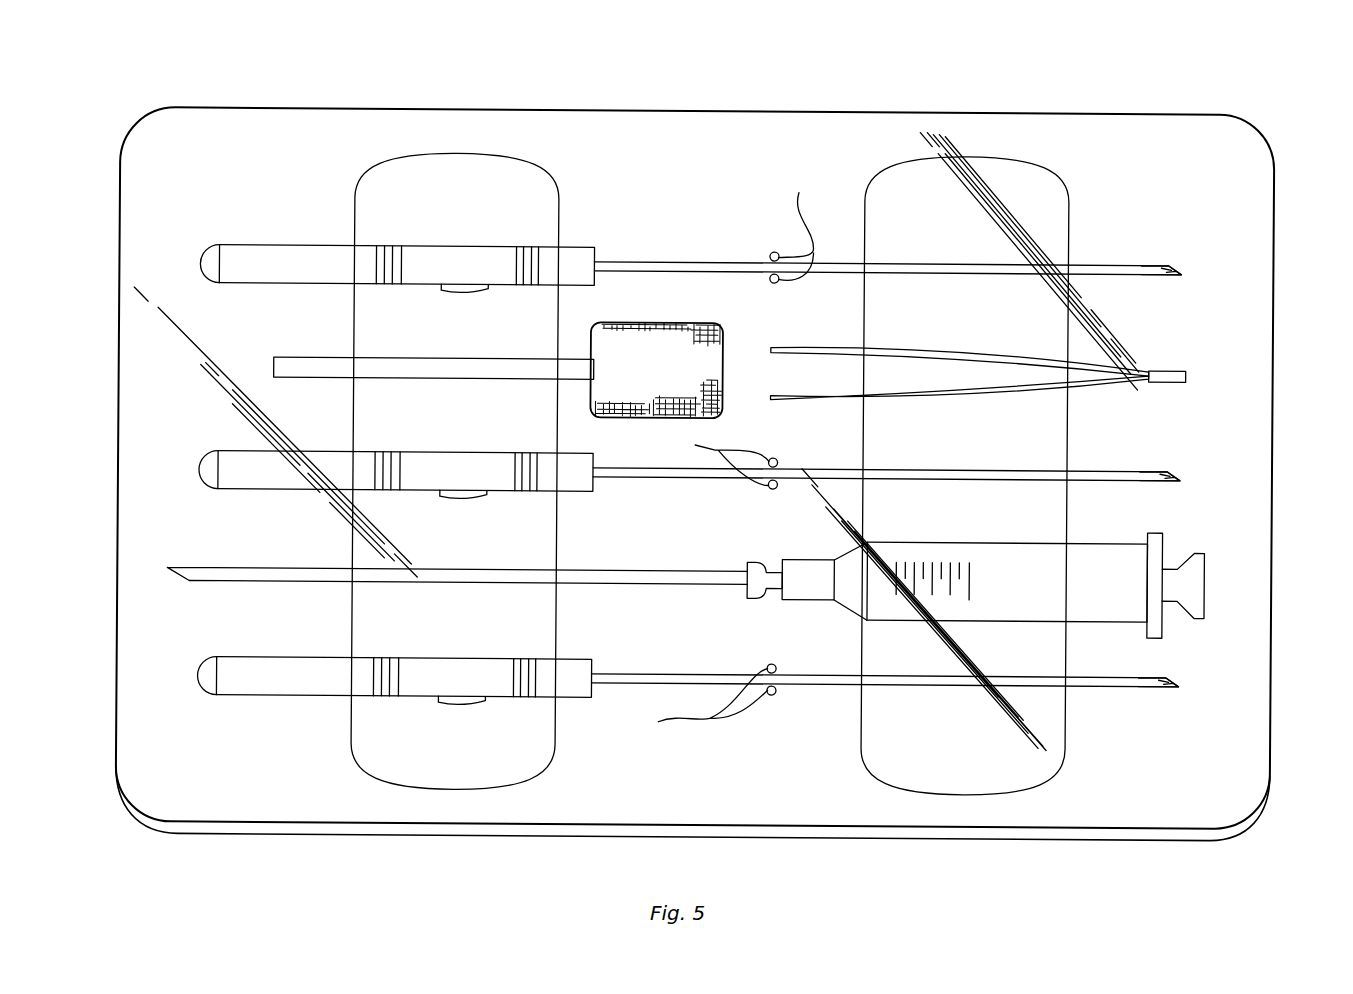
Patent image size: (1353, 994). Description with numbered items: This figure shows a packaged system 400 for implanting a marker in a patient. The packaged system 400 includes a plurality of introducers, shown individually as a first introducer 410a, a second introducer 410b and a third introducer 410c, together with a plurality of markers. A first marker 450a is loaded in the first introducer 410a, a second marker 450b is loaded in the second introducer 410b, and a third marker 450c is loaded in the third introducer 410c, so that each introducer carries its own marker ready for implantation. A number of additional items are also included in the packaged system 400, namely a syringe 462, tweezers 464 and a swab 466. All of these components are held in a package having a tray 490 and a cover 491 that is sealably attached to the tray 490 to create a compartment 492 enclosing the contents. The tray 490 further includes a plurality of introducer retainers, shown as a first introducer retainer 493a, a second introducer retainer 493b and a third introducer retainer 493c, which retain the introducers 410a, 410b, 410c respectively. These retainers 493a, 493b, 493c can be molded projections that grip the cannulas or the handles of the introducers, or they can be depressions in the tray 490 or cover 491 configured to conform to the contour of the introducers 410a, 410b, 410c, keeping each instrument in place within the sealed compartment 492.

The packaged system 400 is at (1208, 78).
The tray 490 is at (845, 834).
The cover 491 is at (157, 311).
The compartment 492 is at (919, 463).
The first introducer 410a is at (750, 245).
The second introducer 410b is at (742, 500).
The third introducer 410c is at (797, 700).
The first marker 450a is at (1133, 262).
The second marker 450b is at (1132, 466).
The third marker 450c is at (1133, 687).
The first introducer retainer 493a is at (805, 226).
The second introducer retainer 493b is at (710, 460).
The third introducer retainer 493c is at (693, 706).
The syringe 462 is at (1195, 582).
The tweezers 464 is at (1163, 368).
The swab 466 is at (712, 323).